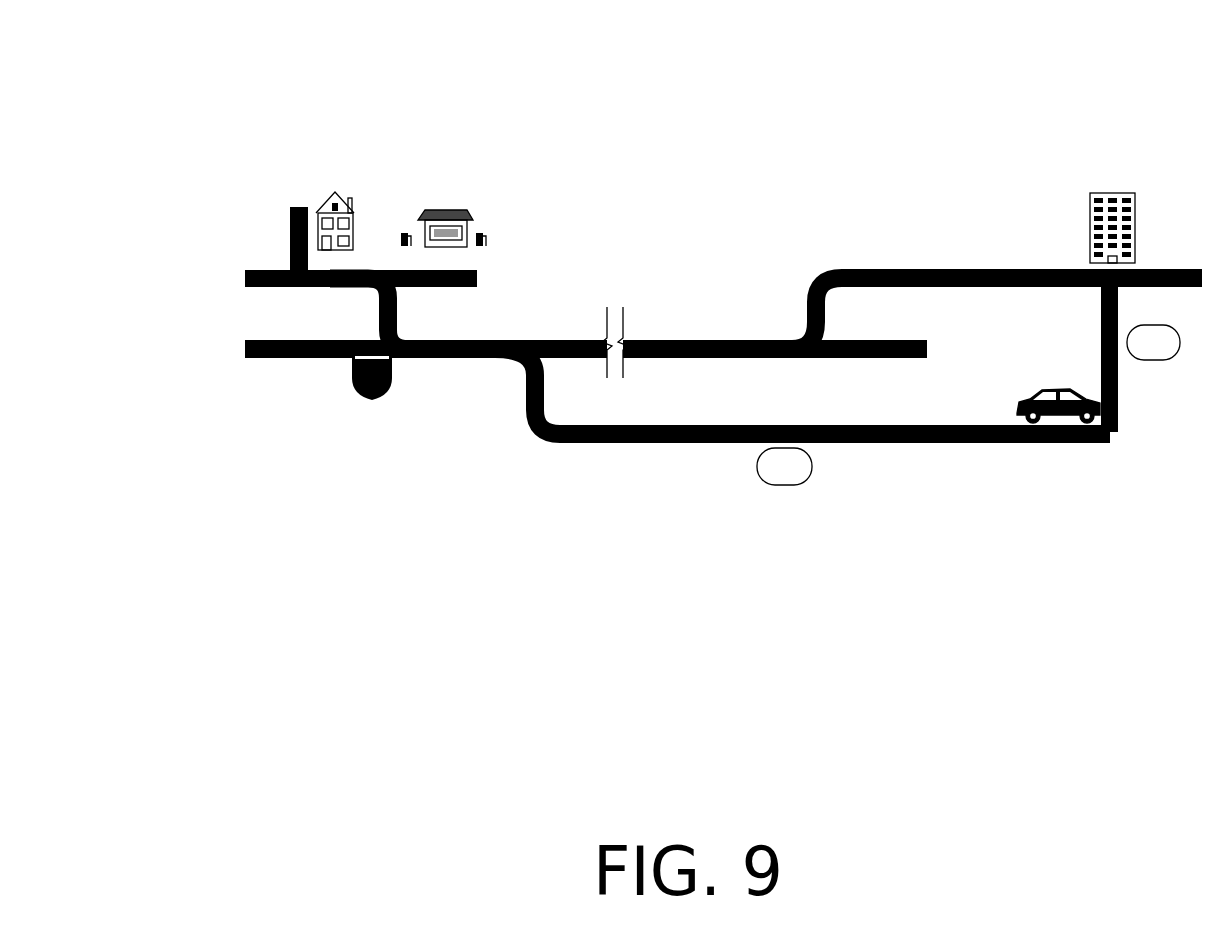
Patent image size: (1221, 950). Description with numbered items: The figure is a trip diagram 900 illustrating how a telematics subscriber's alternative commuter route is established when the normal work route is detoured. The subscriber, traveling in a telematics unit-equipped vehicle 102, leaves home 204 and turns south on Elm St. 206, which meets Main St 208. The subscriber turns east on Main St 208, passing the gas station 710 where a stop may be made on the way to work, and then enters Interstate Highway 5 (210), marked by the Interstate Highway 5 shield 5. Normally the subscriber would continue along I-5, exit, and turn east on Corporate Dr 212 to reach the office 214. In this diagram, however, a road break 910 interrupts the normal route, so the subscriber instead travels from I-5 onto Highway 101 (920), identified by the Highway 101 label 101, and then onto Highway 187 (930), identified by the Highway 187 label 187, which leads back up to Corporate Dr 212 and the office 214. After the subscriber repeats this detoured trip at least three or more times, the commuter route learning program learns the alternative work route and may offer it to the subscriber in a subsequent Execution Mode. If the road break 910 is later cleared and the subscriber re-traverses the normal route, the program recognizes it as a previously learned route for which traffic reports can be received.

The trip diagram 900 is at (697, 40).
The Elm St. 206 is at (290, 228).
The home 204 is at (353, 228).
The gas station 710 is at (447, 212).
The Main St 208 is at (445, 288).
The Interstate Highway 5 210 is at (332, 360).
The road break 910 is at (615, 308).
The Corporate Dr 212 is at (872, 263).
The office 214 is at (1137, 228).
The vehicle 102 is at (1030, 390).
The Highway 187 is at (1153, 342).
The Highway 187 930 is at (1120, 383).
The Highway 101 920 is at (650, 445).
The Highway 101 is at (784, 466).
The Interstate Highway 5 is at (372, 376).